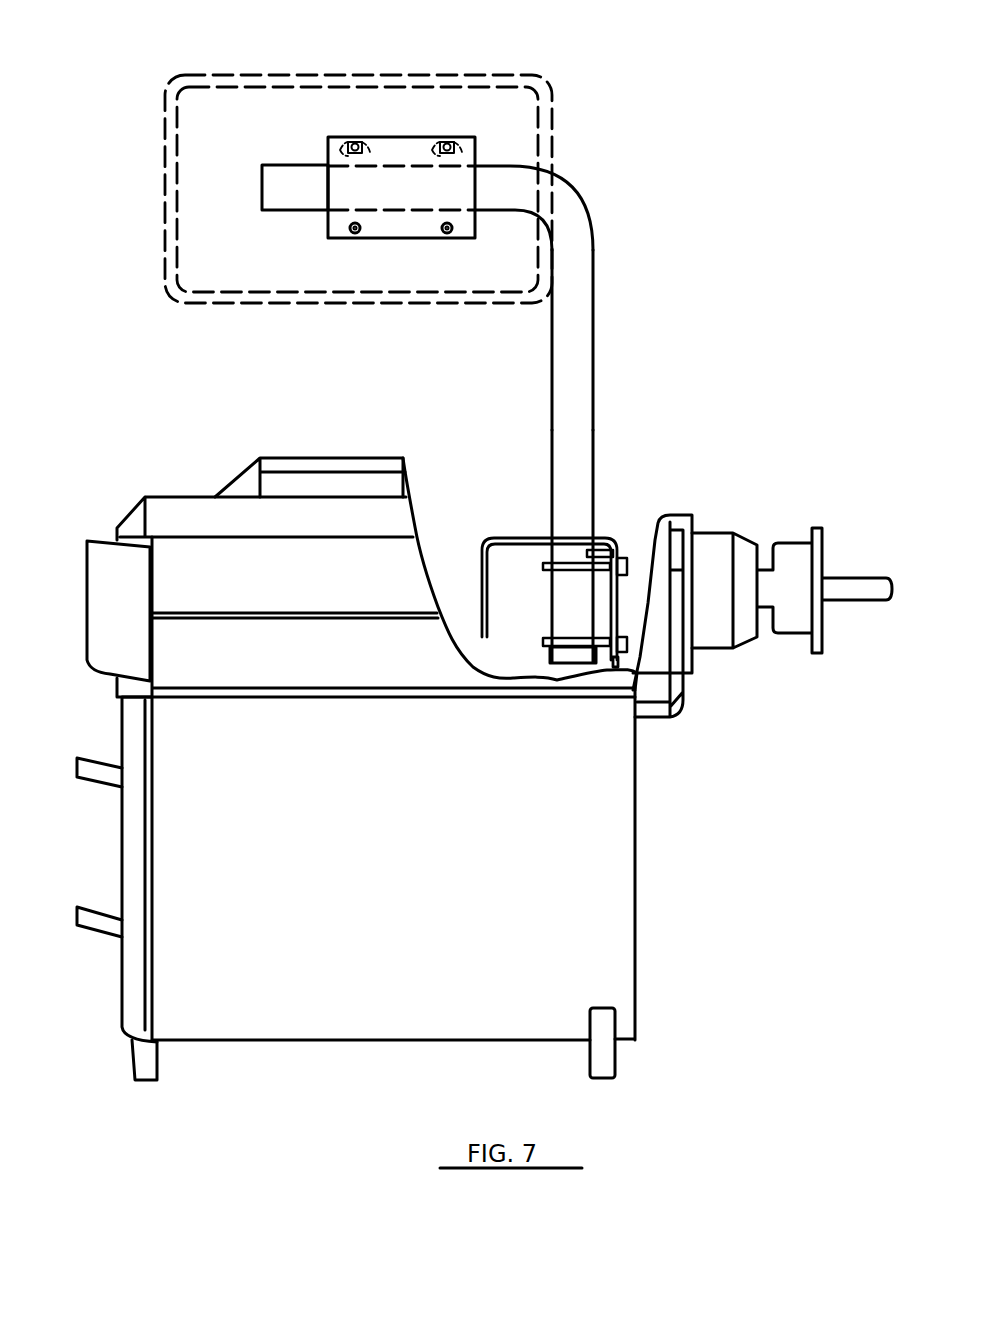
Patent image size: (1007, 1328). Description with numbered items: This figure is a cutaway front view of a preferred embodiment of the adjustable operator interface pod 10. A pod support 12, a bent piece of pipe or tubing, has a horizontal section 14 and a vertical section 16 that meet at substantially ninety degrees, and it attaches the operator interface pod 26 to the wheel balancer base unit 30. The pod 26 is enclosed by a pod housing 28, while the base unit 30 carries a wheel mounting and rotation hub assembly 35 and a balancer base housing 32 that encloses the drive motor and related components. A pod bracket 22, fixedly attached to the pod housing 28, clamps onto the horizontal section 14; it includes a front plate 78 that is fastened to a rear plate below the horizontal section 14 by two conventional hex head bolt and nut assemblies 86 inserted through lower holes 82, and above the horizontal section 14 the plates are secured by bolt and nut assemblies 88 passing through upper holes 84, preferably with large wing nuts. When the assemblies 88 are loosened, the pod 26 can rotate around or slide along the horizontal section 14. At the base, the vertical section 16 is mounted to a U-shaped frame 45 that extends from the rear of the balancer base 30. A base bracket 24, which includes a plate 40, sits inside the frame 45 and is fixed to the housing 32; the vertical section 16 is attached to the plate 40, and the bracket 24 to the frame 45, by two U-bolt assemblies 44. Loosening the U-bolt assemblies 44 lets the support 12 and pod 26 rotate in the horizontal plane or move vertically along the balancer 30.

The adjustable operator interface pod 10 is at (650, 242).
The pod support 12 is at (581, 376).
The horizontal section 14 is at (512, 180).
The vertical section 16 is at (595, 410).
The pod bracket 22 is at (477, 150).
The base bracket 24 is at (620, 598).
The operator interface pod 26 is at (527, 96).
The pod housing 28 is at (212, 74).
The wheel balancer base unit 30 is at (636, 898).
The balancer base housing 32 is at (618, 815).
The wheel mounting and rotation hub assembly 35 is at (745, 620).
The plate 40 is at (607, 540).
The U-bolt assemblies 44 is at (547, 641).
The U-shaped frame 45 is at (523, 537).
The front plate 78 is at (343, 190).
The lower holes 82 is at (360, 238).
The upper holes 84 is at (356, 143).
The hex head bolt and nut assemblies 86 is at (355, 240).
The bolt and nut assemblies 88 is at (341, 143).